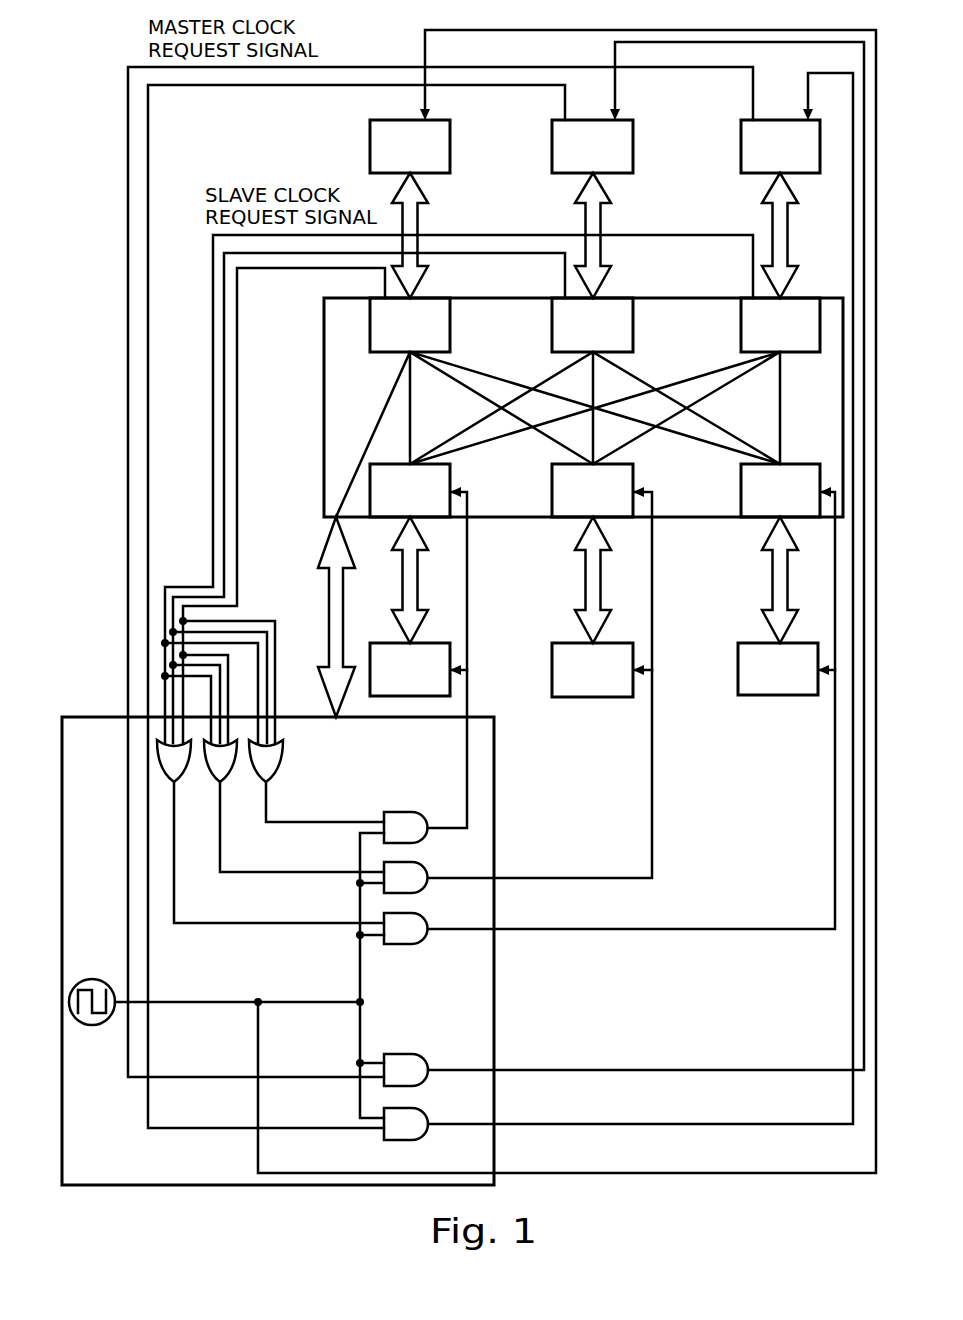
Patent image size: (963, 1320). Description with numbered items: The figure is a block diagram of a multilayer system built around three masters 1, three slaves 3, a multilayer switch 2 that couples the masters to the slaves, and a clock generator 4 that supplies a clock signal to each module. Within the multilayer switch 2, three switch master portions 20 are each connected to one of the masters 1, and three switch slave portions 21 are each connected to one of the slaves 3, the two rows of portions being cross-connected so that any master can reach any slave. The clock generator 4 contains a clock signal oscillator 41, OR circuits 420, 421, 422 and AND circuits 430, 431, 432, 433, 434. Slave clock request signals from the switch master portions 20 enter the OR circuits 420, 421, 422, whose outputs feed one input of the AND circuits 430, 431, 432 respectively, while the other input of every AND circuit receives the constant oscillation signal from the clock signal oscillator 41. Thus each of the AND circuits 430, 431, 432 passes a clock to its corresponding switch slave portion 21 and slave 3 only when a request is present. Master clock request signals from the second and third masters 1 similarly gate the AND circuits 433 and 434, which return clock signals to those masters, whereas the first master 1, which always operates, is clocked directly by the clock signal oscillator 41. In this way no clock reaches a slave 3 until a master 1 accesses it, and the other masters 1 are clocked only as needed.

The master 1 is at (437, 119).
The multilayer switch 2 is at (840, 296).
The switch master portion 20 is at (437, 297).
The switch slave portion 21 is at (452, 476).
The slave 3 is at (430, 642).
The clock generator 4 is at (497, 763).
The clock signal oscillator 41 is at (93, 1026).
The OR circuit 420 is at (285, 751).
The OR circuit 421 is at (233, 782).
The OR circuit 422 is at (187, 782).
The AND circuit 430 is at (428, 840).
The AND circuit 431 is at (428, 890).
The AND circuit 432 is at (428, 940).
The AND circuit 433 is at (428, 1082).
The AND circuit 434 is at (428, 1136).